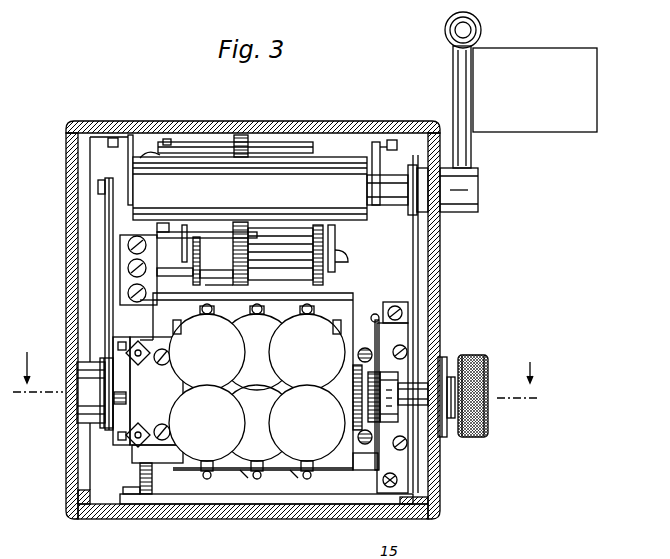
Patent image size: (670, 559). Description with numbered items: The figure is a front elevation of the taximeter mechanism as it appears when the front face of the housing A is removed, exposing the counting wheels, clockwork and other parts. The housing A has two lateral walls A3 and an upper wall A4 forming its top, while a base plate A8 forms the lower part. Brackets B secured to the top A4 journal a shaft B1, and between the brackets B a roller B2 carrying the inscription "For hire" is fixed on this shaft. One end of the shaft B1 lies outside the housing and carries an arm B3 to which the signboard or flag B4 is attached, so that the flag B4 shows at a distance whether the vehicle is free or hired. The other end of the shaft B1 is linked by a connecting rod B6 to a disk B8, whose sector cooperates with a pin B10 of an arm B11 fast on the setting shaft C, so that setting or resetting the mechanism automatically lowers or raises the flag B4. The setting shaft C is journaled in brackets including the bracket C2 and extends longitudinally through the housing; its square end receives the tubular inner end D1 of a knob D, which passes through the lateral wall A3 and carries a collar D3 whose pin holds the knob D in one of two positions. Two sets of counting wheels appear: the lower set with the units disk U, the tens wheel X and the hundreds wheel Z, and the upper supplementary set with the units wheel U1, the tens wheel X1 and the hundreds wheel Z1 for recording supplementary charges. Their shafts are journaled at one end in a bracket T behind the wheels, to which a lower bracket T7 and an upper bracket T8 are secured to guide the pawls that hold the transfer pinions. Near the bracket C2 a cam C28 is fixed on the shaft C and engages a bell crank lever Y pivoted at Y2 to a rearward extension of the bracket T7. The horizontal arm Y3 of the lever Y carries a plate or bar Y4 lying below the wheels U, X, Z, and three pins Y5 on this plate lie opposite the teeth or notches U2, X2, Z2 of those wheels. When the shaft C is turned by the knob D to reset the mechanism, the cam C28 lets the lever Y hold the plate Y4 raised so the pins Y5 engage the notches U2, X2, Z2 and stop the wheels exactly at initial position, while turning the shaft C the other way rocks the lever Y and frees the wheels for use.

The housing A is at (276, 375).
The lateral walls A3 is at (68, 296).
The upper wall A4 is at (280, 122).
The base plate A8 is at (322, 507).
The brackets B is at (115, 122).
The shaft B1 is at (390, 193).
The roller B2 is at (342, 163).
The arm B3 is at (472, 150).
The signboard or flag B4 is at (582, 88).
The connecting rod B6 is at (108, 253).
The disk B8 is at (100, 388).
The pin B10 is at (100, 432).
The arm B11 is at (115, 435).
The setting shaft C is at (121, 398).
The bracket C2 is at (392, 376).
The cam C28 is at (403, 346).
The knob or handle D is at (482, 435).
The inner end of knob D1 is at (417, 407).
The collar D3 is at (443, 360).
The bracket T is at (154, 392).
The lower bracket T7 is at (277, 490).
The upper bracket T8 is at (332, 305).
The units disk U is at (307, 423).
The upper units wheel U1 is at (307, 347).
The tooth or notch U2 is at (316, 473).
The counting wheel X is at (257, 423).
The upper tens wheel X1 is at (257, 347).
The tooth or notch X2 is at (260, 470).
The bell crank lever Y is at (377, 333).
The pivot Y2 is at (388, 485).
The horizontal arm Y3 is at (294, 480).
The plate or bar Y4 is at (240, 480).
The projections or pins Y5 is at (263, 478).
The counting wheel Z is at (207, 423).
The upper hundreds wheel Z1 is at (207, 347).
The tooth or notch Z2 is at (212, 475).